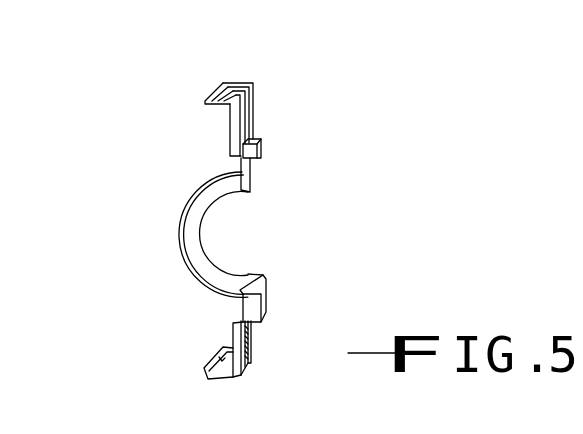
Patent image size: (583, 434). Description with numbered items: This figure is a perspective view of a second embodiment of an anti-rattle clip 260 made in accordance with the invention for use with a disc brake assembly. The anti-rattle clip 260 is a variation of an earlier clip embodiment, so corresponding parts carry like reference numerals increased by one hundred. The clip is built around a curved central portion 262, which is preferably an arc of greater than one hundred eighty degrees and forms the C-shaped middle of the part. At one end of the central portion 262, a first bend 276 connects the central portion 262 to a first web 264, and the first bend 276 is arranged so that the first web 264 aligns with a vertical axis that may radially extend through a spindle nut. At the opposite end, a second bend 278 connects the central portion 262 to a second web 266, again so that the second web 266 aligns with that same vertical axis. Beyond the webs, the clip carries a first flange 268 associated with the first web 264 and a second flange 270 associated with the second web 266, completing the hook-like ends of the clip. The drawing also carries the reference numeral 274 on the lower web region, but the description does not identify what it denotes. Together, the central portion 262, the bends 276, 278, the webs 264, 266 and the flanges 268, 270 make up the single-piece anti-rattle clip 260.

The anti-rattle clip 260 is at (158, 223).
The curved central portion 262 is at (191, 264).
The first web 264 is at (254, 112).
The second web 266 is at (252, 342).
The first flange 268 is at (232, 82).
The second flange 270 is at (206, 376).
The edge flange 274 is at (249, 366).
The first bend 276 is at (260, 157).
The second bend 278 is at (272, 290).